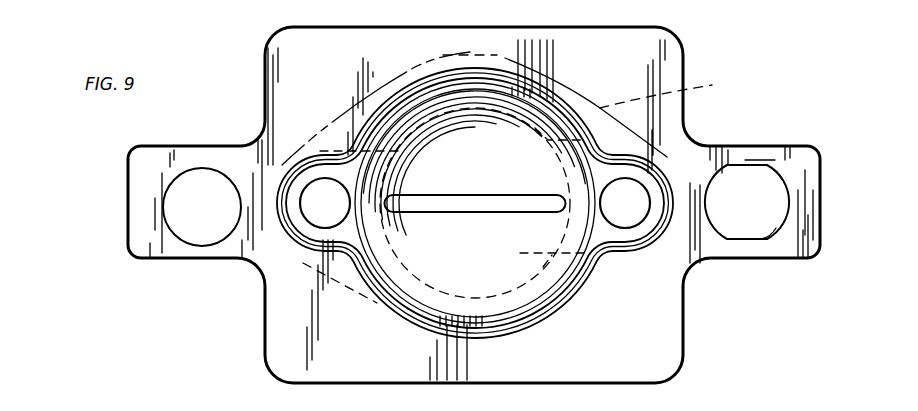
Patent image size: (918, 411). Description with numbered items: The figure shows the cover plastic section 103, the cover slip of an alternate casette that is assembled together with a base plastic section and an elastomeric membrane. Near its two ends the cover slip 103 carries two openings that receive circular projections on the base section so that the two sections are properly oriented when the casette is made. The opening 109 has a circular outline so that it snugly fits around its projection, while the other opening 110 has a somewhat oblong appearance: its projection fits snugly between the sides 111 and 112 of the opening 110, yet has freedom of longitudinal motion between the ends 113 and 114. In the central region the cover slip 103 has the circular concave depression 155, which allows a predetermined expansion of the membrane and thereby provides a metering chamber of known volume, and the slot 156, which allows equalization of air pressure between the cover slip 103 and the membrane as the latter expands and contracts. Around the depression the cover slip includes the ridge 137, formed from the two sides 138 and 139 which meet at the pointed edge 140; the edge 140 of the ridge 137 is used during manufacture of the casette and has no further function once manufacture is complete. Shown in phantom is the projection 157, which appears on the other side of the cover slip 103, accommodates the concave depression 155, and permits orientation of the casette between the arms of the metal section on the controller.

The cover plastic section 103 is at (119, 182).
The opening 109 is at (196, 178).
The opening 110 is at (742, 228).
The side 111 is at (768, 252).
The side 112 is at (753, 153).
The end 113 is at (716, 143).
The end 114 is at (788, 188).
The ridge 137 is at (572, 297).
The side 138 is at (513, 332).
The side 139 is at (503, 318).
The pointed edge 140 is at (557, 303).
The circular concave depression 155 is at (400, 283).
The slot 156 is at (448, 194).
The projection 157 is at (589, 106).